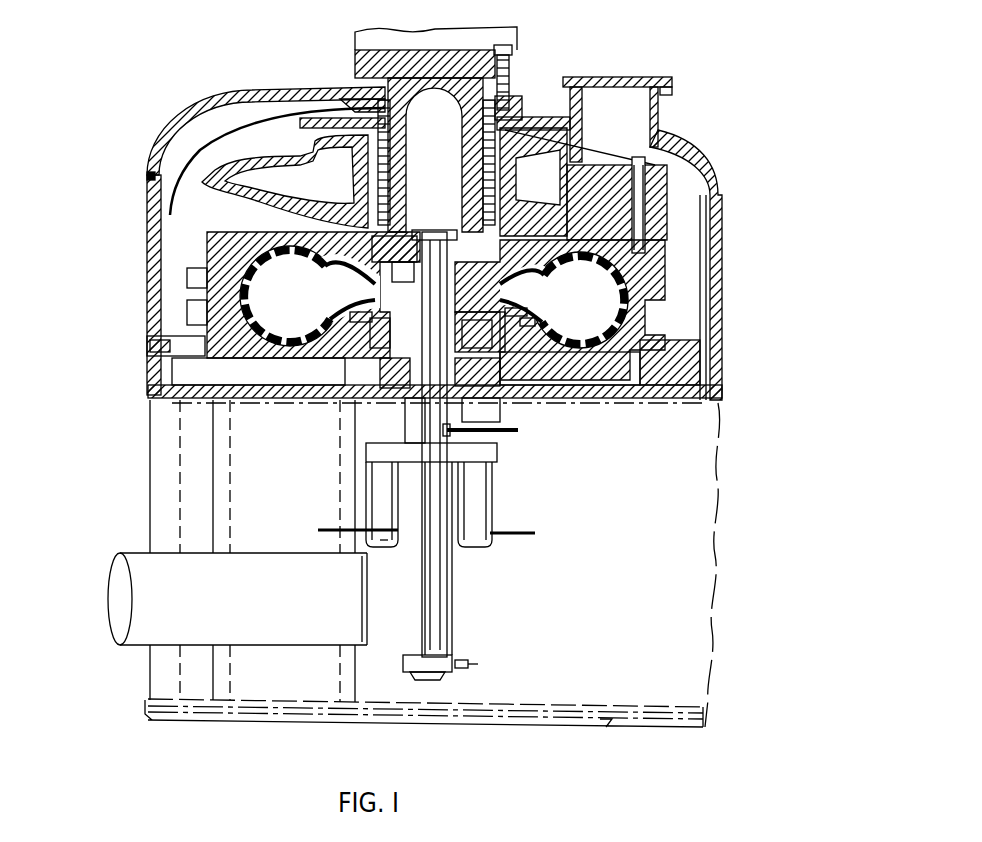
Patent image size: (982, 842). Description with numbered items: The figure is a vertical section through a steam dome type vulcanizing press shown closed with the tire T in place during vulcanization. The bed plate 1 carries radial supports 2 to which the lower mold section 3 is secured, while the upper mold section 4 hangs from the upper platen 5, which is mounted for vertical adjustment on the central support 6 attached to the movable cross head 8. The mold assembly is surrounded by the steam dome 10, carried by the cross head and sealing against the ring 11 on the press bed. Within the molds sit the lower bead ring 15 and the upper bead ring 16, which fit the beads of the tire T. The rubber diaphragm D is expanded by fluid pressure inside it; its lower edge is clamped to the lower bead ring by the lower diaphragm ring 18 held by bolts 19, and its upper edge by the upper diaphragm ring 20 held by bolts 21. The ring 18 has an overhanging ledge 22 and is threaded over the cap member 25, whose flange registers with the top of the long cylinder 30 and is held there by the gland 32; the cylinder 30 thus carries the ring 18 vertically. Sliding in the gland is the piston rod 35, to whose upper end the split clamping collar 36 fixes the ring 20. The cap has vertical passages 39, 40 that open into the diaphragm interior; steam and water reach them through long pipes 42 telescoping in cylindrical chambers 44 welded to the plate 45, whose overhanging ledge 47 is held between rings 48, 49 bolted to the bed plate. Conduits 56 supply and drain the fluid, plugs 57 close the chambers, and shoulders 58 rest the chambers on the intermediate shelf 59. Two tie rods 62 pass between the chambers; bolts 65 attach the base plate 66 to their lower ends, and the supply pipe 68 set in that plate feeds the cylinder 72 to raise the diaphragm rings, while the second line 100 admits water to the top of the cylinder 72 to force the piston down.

The bed plate 1 is at (272, 410).
The radial supports 2 is at (183, 385).
The lower mold section 3 is at (226, 358).
The upper mold section 4 is at (225, 265).
The upper platen 5 is at (212, 200).
The central support 6 is at (478, 92).
The movable cross head 8 is at (508, 72).
The steam dome 10 is at (195, 136).
The ring 11 is at (150, 372).
The lower bead ring 15 is at (348, 352).
The upper bead ring 16 is at (403, 262).
The lower diaphragm ring 18 is at (360, 312).
The bolts 19 is at (371, 325).
The upper diaphragm ring 20 is at (505, 280).
The bolts 21 is at (510, 212).
The overhanging ledge 22 is at (470, 322).
The cap member 25 is at (505, 312).
The cylinder 30 is at (415, 405).
The gland 32 is at (352, 292).
The piston rod 35 is at (440, 238).
The split clamping collar 36 is at (388, 248).
The vertical passage 39 is at (530, 318).
The vertical passage 40 is at (380, 410).
The pipes 42 is at (310, 470).
The cylindrical chambers 44 is at (372, 500).
The plate 45 is at (375, 395).
The overhanging ledge 47 is at (378, 380).
The ring 48 is at (548, 388).
The ring 49 is at (542, 392).
The inlet and outlet conduits 56 is at (318, 531).
The plugs 57 is at (380, 548).
The shoulders 58 is at (497, 445).
The intermediate shelf 59 is at (496, 458).
The tie rods 62 is at (440, 603).
The bolts 65 is at (435, 675).
The base plate 66 is at (405, 668).
The fluid pressure supply pipe 68 is at (470, 662).
The cylinder 72 is at (450, 630).
The pressure line 100 is at (518, 430).
The diaphragm D is at (250, 282).
The tire T is at (261, 307).